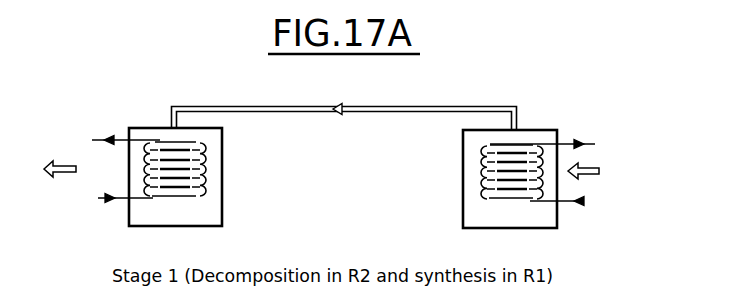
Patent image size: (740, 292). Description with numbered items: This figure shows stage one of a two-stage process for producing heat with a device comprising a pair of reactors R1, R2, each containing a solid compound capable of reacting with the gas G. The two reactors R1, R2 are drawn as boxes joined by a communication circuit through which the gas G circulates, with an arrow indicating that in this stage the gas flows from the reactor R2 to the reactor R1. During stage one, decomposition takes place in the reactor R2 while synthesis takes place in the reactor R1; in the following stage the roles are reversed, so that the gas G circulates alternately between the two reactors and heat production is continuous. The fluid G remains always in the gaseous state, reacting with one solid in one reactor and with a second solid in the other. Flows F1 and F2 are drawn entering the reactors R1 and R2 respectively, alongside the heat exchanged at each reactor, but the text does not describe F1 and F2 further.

The gas G is at (344, 107).
The reactor R1 is at (175, 177).
The reactor R2 is at (510, 179).
The heat transfer fluid flow to reactor 1 F1 is at (112, 196).
The heat transfer fluid flow to reactor 2 F2 is at (569, 199).